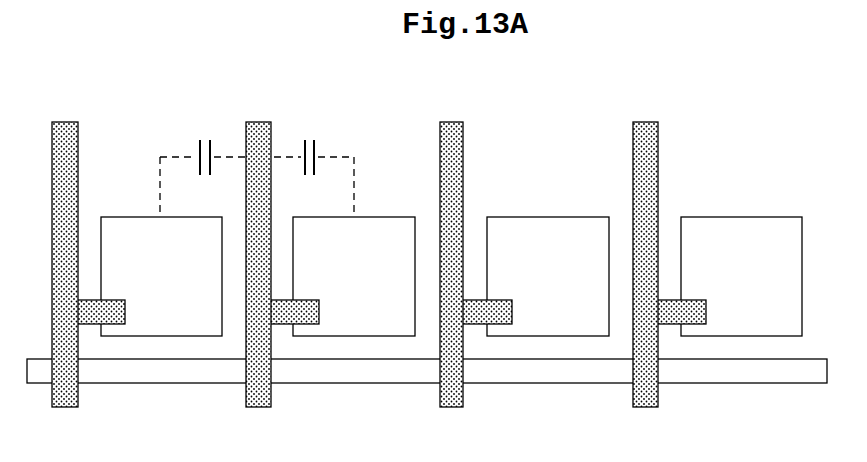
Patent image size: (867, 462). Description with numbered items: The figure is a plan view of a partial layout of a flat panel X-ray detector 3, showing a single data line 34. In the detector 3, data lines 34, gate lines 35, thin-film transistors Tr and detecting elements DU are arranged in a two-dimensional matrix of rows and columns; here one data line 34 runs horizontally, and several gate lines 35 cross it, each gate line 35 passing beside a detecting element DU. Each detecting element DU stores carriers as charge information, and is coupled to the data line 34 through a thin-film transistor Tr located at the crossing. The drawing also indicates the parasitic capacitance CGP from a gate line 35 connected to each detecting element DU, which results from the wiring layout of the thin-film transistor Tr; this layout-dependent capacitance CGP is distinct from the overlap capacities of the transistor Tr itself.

The flat panel X-ray detector 3 is at (451, 214).
The gate line 35 is at (450, 182).
The data line 34 is at (705, 373).
The thin-film transistor Tr is at (505, 350).
The parasitic capacitance CGP is at (347, 121).
The detecting element DU is at (145, 290).